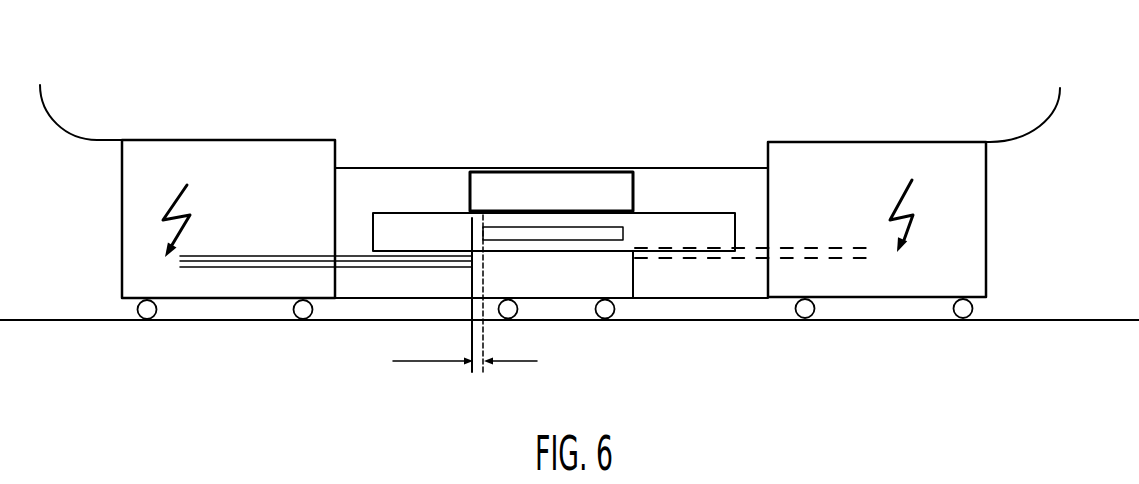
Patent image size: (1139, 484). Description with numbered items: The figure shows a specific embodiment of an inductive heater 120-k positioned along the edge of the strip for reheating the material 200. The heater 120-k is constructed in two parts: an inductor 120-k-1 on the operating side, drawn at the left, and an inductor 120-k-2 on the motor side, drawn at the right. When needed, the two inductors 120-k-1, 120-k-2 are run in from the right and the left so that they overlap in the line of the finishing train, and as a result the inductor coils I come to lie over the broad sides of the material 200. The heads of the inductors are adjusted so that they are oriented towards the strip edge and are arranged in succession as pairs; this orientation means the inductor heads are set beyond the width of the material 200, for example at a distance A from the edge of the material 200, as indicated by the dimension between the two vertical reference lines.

The inductive heater 120-k is at (550, 186).
The inductor on operating side 120-k-1 is at (202, 152).
The inductor on motor side 120-k-2 is at (852, 150).
The inductor coils I is at (484, 179).
The material 200 is at (597, 233).
The distance from the edge of the material A is at (465, 293).